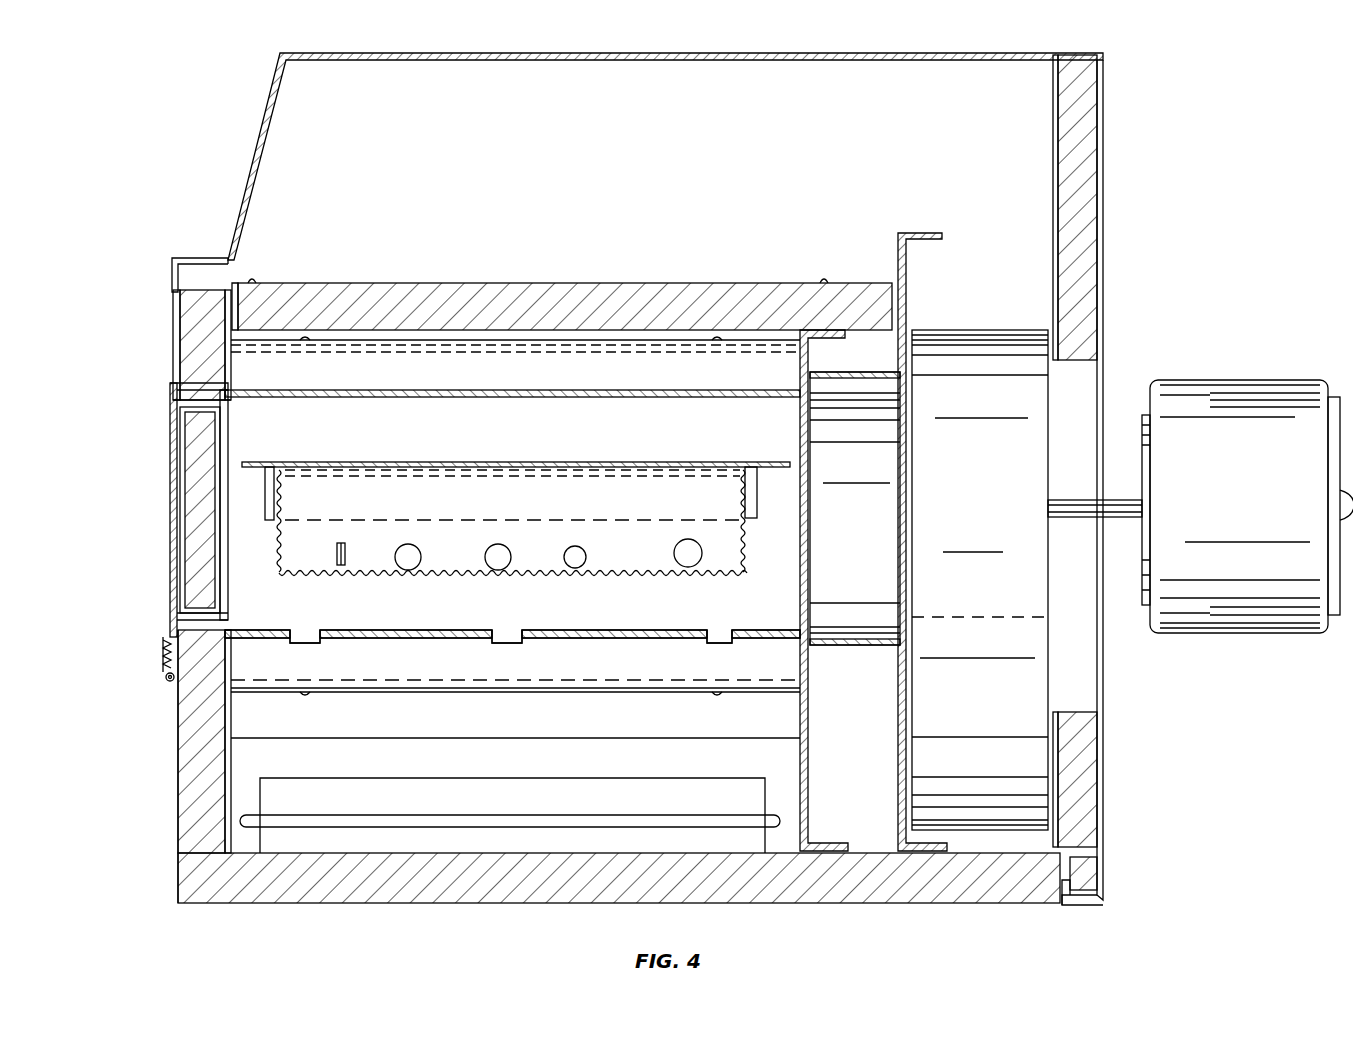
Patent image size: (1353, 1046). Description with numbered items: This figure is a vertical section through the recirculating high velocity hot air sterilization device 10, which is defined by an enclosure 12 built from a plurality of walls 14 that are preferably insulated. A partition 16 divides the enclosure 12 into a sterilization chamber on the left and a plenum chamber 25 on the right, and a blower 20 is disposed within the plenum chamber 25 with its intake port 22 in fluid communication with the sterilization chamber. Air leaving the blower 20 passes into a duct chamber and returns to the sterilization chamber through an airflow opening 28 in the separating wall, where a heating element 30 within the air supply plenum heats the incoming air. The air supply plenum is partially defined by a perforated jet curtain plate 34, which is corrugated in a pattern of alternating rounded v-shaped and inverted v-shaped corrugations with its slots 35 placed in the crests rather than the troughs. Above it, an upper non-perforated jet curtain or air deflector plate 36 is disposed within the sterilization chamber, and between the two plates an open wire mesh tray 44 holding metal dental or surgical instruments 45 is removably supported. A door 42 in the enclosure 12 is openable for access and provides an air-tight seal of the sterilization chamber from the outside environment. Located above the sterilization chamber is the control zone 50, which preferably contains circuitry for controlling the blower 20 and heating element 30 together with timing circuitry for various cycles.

The recirculating high velocity hot air sterilization device 10 is at (1138, 275).
The enclosure 12 is at (267, 440).
The walls 14 is at (1108, 225).
The partition 16 is at (808, 765).
The blower 20 is at (1002, 330).
The intake port 22 is at (812, 556).
The plenum chamber 25 is at (860, 700).
The airflow opening 28 is at (655, 812).
The heating element 30 is at (780, 821).
The perforated jet curtain plate 34 is at (240, 630).
The slots 35 is at (316, 613).
The non-perforated jet curtain plate 36 is at (665, 395).
The door 42 is at (170, 490).
The open wire mesh tray 44 is at (737, 573).
The metal instruments 45 is at (346, 548).
The control zone 50 is at (642, 185).